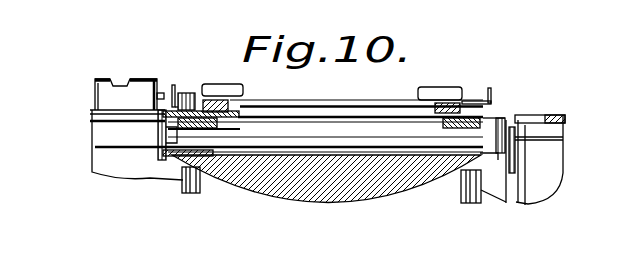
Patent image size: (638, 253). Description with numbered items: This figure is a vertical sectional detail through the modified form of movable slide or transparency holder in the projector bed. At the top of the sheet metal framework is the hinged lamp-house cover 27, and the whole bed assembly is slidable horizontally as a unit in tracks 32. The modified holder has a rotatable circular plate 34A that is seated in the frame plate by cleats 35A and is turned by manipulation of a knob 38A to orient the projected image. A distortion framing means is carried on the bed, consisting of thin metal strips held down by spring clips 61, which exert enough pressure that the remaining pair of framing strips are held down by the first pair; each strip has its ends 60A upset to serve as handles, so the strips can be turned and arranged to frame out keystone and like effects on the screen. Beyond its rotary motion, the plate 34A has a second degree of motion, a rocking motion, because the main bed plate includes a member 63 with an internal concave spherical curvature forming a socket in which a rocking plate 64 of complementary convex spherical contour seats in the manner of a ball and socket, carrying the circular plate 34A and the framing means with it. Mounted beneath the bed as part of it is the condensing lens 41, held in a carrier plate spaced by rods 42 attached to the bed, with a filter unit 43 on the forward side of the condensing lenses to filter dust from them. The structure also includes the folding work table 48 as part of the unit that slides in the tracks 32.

The hinged lamp-house cover 27 is at (143, 78).
The tracks 32 is at (92, 121).
The circular plate 34A is at (243, 104).
The cleats 35A is at (222, 127).
The knob 38A is at (190, 92).
The condensing lens 41 is at (350, 185).
The rods 42 is at (193, 195).
The filter unit 43 is at (519, 174).
The folding work table 48 is at (558, 111).
The upset ends 60A is at (173, 85).
The spring clips 61 is at (216, 93).
The member 63 is at (157, 130).
The rocking plate 64 is at (168, 148).